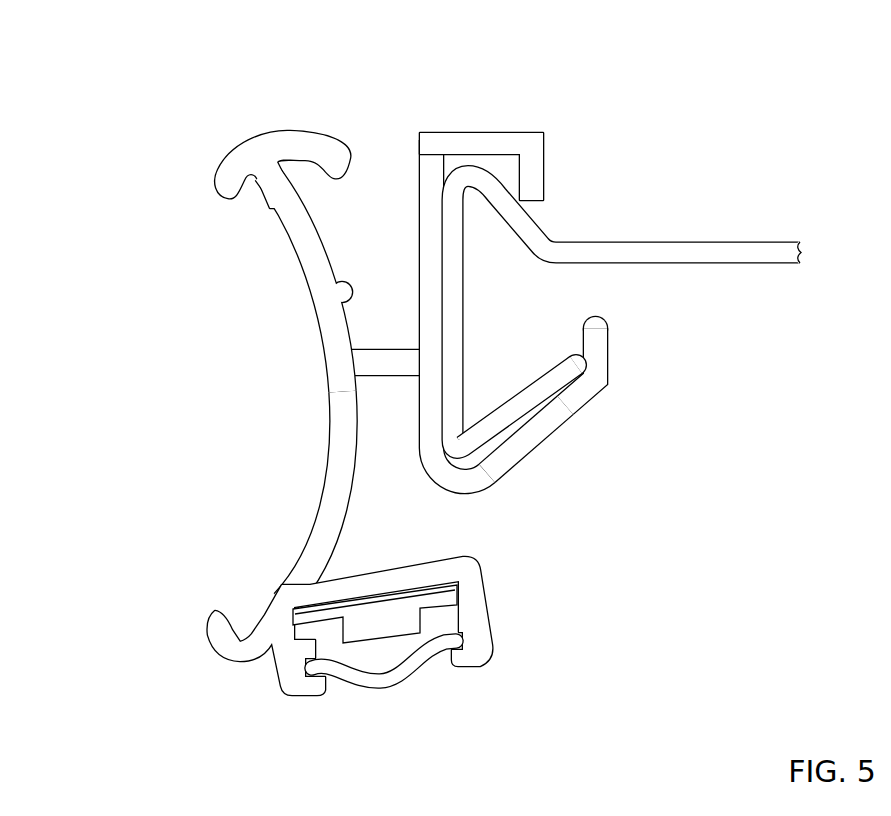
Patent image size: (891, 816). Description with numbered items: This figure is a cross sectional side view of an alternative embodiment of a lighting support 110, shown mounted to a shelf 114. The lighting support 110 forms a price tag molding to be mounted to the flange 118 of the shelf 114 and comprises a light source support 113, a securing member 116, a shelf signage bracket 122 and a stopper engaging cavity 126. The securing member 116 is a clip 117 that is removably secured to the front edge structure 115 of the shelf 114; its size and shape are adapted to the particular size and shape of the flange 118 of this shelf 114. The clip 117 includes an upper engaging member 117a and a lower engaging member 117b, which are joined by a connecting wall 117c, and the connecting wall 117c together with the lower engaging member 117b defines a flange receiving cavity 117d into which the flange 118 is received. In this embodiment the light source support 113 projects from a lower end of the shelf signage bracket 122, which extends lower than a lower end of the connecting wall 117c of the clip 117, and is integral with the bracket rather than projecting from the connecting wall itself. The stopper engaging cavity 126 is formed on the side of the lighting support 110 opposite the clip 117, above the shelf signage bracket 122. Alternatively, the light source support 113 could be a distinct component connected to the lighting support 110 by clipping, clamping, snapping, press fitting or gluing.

The lighting support 110 is at (416, 384).
The light source support 113 is at (250, 698).
The shelf 114 is at (627, 312).
The front edge structure 115 is at (490, 269).
The securing member 116 is at (553, 455).
The clip 117 is at (526, 262).
The upper engaging member 117a is at (495, 145).
The lower engaging member 117b is at (576, 393).
The connecting wall 117c is at (428, 432).
The flange receiving cavity 117d is at (548, 336).
The flange 118 is at (456, 314).
The shelf signage bracket 122 is at (333, 500).
The stopper engaging cavity 126 is at (386, 158).